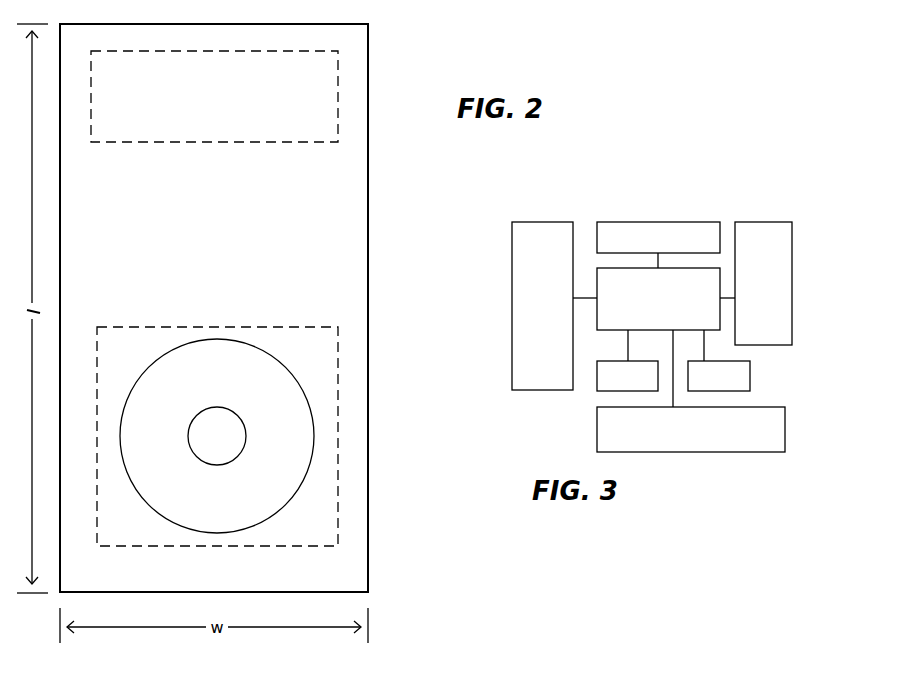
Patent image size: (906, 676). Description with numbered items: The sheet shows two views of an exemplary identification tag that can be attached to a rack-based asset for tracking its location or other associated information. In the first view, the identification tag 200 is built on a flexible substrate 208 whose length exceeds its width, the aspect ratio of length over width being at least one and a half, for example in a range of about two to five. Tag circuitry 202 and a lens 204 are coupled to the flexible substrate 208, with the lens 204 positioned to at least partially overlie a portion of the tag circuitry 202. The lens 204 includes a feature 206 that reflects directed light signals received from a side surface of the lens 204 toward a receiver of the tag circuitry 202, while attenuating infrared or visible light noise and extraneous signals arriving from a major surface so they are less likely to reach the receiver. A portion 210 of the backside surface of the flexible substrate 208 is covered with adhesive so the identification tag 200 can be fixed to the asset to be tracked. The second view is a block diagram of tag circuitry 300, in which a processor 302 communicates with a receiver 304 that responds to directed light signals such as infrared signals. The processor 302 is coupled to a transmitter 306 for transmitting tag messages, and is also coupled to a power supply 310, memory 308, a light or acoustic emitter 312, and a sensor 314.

In FIG. 2, the identification tag 200 is at (368, 212).
In FIG. 2, the tag circuitry 202 is at (338, 350).
In FIG. 2, the lens 204 is at (312, 416).
In FIG. 2, the feature 206 is at (245, 447).
In FIG. 2, the flexible substrate 208 is at (348, 273).
In FIG. 2, the portion 210 is at (338, 92).
In FIG. 3, the tag circuitry 300 is at (643, 196).
In FIG. 3, the processor 302 is at (658, 299).
In FIG. 3, the receiver 304 is at (627, 376).
In FIG. 3, the transmitter 306 is at (691, 429).
In FIG. 3, the memory 308 is at (658, 237).
In FIG. 3, the power supply 310 is at (542, 306).
In FIG. 3, the light or acoustic emitter 312 is at (719, 376).
In FIG. 3, the sensor 314 is at (763, 283).